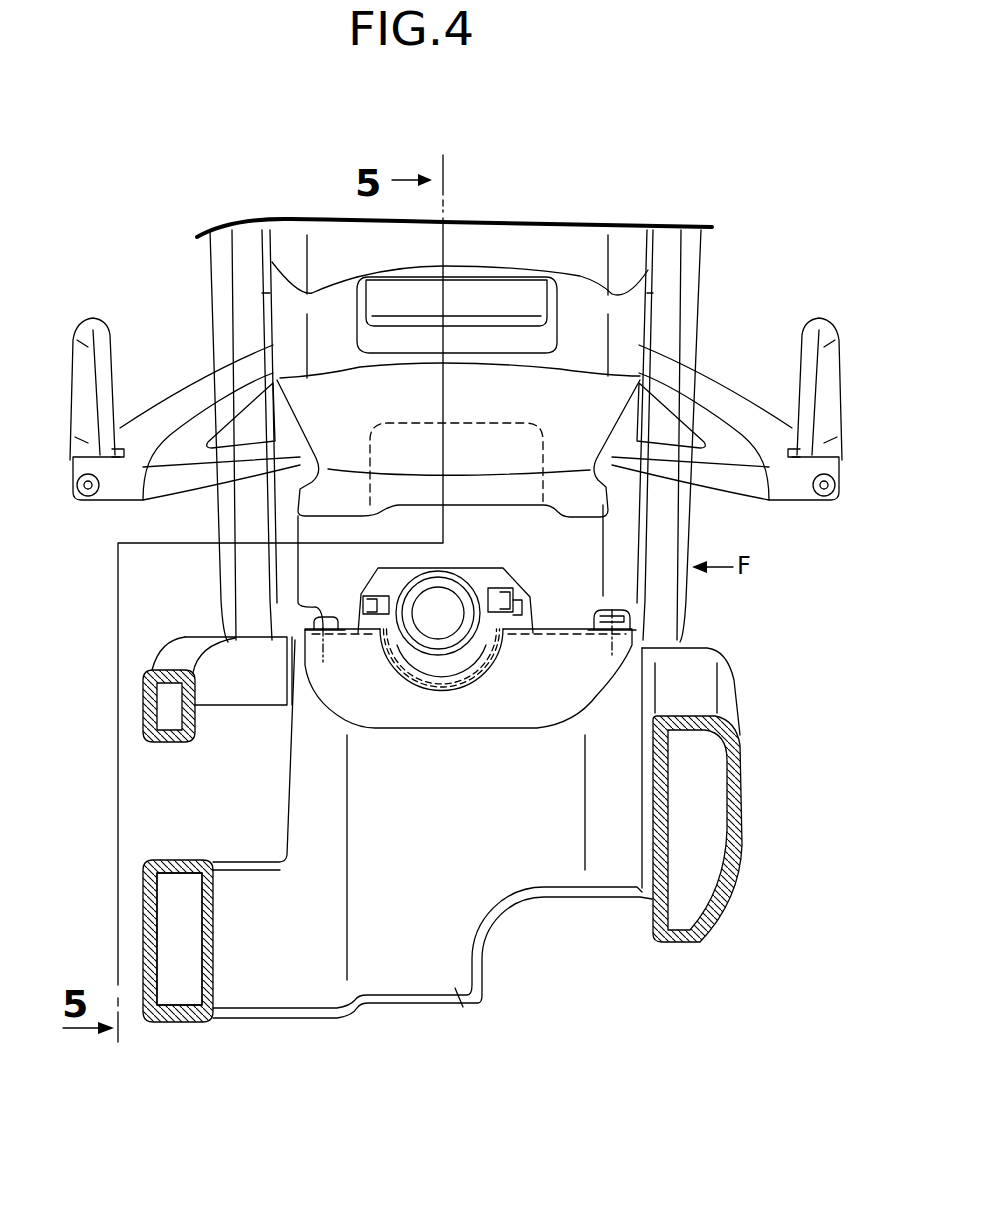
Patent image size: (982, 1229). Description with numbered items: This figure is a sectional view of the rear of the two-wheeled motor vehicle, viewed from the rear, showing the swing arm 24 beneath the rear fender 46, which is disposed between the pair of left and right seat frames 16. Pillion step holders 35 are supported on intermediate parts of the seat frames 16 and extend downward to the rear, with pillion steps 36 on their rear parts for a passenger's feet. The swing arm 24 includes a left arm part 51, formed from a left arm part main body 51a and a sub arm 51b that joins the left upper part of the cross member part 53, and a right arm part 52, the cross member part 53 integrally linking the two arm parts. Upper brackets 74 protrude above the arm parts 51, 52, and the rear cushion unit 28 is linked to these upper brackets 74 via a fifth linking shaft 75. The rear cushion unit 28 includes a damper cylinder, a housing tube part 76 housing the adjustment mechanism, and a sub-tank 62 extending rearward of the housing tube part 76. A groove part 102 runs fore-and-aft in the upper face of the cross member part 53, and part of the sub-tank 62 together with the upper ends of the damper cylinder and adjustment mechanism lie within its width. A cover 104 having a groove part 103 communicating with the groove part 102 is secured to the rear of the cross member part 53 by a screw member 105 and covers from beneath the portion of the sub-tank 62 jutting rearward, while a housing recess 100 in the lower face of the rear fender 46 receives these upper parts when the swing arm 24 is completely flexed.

The seat frames 16 is at (246, 298).
The swing arm 24 is at (372, 1018).
The rear cushion unit 28 is at (508, 580).
The pillion step holders 35 is at (184, 392).
The pillion steps 36 is at (83, 365).
The rear fender 46 is at (345, 420).
The left arm part 51 is at (192, 1028).
The left arm part main body 51a is at (205, 938).
The sub arm 51b is at (172, 652).
The right arm part 52 is at (690, 945).
The cross member part 53 is at (468, 1012).
The sub-tank 62 is at (438, 666).
The upper brackets 74 is at (386, 596).
The fifth linking shaft 75 is at (515, 606).
The housing tube part 76 is at (390, 667).
The housing recess 100 is at (457, 437).
The groove part 102 is at (477, 687).
The groove part 103 is at (410, 680).
The cover 104 is at (567, 706).
The screw member 105 is at (610, 618).